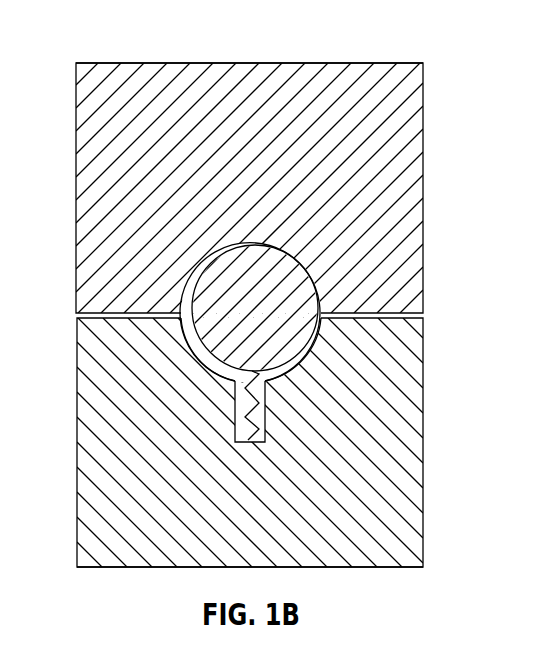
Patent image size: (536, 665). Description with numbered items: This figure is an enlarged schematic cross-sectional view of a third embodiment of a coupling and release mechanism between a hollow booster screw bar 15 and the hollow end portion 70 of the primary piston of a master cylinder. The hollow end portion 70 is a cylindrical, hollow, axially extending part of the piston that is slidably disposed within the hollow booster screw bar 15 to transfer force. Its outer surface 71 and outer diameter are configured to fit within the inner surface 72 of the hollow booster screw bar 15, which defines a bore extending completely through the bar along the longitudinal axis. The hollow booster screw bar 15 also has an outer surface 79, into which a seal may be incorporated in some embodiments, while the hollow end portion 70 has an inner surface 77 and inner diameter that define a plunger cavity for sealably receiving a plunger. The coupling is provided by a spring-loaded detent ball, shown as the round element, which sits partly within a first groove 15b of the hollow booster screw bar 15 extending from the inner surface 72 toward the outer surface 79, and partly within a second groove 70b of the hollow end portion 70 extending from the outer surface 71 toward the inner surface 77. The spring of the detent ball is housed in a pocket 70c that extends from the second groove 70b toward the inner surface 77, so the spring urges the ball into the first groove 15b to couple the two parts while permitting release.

The hollow booster screw bar 15 is at (254, 313).
The first groove 15b is at (272, 246).
The hollow end portion 70 is at (253, 427).
The second groove 70b is at (270, 384).
The pocket 70c is at (236, 418).
The outer surface 71 is at (408, 320).
The inner surface 72 is at (418, 312).
The inner surface 77 is at (93, 567).
The outer surface 79 is at (97, 63).